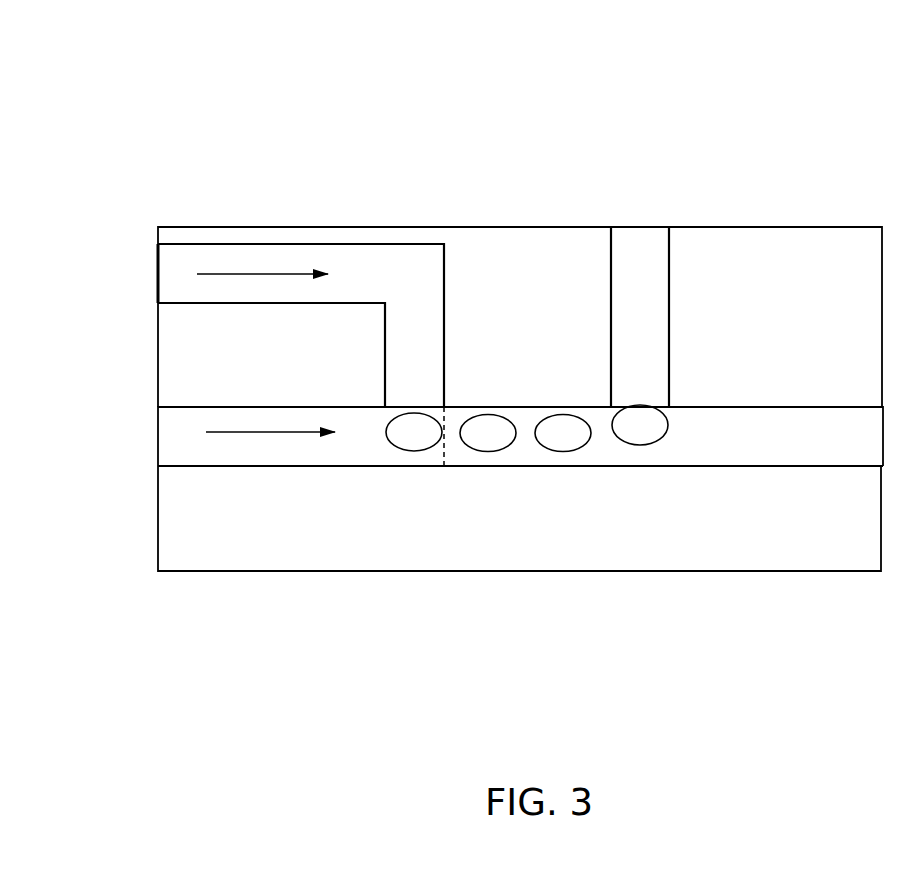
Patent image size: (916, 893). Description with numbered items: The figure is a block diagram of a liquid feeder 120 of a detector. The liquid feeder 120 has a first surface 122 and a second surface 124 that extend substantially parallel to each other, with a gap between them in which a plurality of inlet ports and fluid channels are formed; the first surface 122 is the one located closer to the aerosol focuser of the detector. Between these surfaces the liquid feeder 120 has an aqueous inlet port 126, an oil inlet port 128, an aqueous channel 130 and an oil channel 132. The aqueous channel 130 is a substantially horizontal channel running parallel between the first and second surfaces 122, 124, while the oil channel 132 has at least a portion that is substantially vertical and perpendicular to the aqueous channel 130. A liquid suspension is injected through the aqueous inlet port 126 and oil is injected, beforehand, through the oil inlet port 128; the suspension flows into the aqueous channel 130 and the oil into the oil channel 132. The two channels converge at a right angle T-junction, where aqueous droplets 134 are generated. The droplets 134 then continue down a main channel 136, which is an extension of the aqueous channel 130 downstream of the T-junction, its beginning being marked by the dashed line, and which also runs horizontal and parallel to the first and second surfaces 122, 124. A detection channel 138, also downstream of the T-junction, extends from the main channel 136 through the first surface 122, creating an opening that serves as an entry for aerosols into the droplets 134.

The liquid feeder 120 is at (472, 319).
The first surface 122 is at (520, 284).
The second surface 124 is at (519, 543).
The aqueous inlet port 126 is at (473, 421).
The oil inlet port 128 is at (110, 256).
The aqueous channel 130 is at (204, 480).
The oil channel 132 is at (311, 319).
The aqueous droplets 134 is at (527, 381).
The main channel 136 is at (520, 528).
The detection channel 138 is at (678, 317).